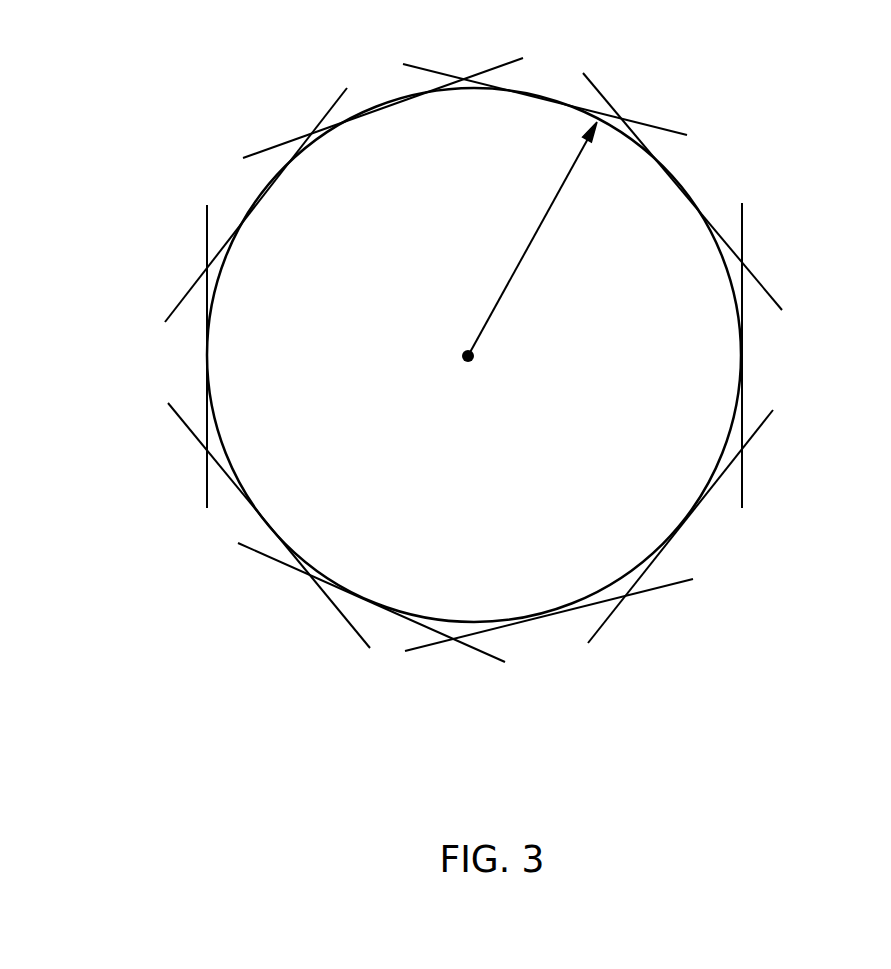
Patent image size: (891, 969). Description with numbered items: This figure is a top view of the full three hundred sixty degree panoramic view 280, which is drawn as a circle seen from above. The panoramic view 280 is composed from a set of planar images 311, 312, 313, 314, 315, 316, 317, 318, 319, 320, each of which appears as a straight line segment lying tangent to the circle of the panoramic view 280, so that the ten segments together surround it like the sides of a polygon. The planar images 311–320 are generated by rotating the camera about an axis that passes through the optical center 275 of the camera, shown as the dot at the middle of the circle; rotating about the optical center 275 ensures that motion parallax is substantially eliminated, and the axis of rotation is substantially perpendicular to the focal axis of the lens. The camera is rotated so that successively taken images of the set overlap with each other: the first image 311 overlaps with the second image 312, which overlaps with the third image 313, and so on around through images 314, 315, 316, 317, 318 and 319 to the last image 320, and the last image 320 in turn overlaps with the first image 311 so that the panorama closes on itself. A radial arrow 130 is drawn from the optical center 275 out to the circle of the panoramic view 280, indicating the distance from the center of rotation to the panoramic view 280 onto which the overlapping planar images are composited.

The radius of circular projection area 130 is at (525, 257).
The optical center 275 is at (468, 362).
The panoramic view 280 is at (225, 273).
The first image 311 is at (390, 105).
The planar image 312 is at (550, 102).
The planar image 313 is at (690, 195).
The planar image 314 is at (744, 370).
The planar image 315 is at (690, 518).
The planar image 316 is at (548, 618).
The planar image 317 is at (387, 613).
The planar image 318 is at (253, 517).
The planar image 319 is at (207, 362).
The last image 320 is at (257, 205).